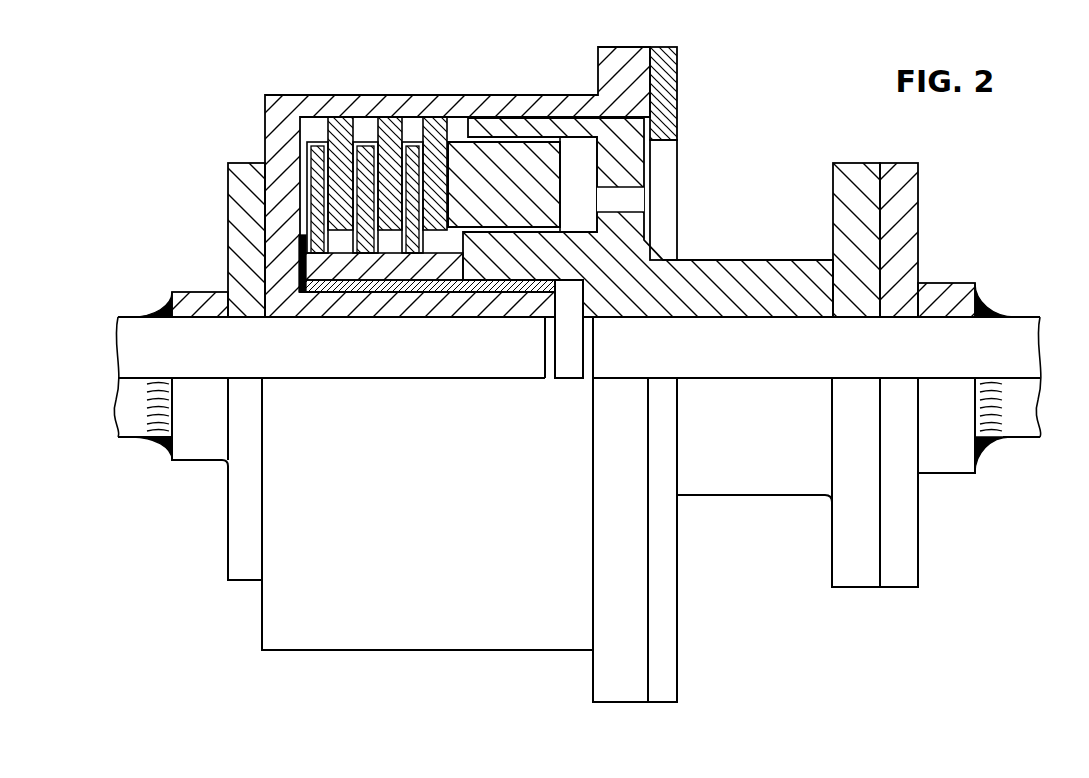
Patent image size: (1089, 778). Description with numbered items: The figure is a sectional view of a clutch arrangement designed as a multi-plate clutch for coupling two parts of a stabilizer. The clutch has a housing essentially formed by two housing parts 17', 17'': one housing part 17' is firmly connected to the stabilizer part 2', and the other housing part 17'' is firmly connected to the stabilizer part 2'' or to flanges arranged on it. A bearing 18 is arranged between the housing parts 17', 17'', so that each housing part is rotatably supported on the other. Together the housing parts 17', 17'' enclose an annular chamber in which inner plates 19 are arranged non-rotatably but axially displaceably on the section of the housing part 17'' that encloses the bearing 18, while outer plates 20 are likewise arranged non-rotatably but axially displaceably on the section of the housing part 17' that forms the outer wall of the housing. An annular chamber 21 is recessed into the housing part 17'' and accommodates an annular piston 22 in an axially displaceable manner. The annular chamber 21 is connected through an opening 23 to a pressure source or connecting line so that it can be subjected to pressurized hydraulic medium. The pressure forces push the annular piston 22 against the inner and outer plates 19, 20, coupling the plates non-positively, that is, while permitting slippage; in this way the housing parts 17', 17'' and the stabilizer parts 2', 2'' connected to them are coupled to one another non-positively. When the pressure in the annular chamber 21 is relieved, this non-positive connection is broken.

The stabilizer part 2' is at (308, 376).
The stabilizer part 2'' is at (841, 378).
The housing part 17' is at (411, 372).
The housing part 17'' is at (719, 374).
The bearing 18 is at (317, 287).
The inner plates 19 is at (318, 157).
The outer plates 20 is at (387, 140).
The annular chamber 21 is at (583, 178).
The annular piston 22 is at (515, 163).
The opening 23 is at (630, 203).